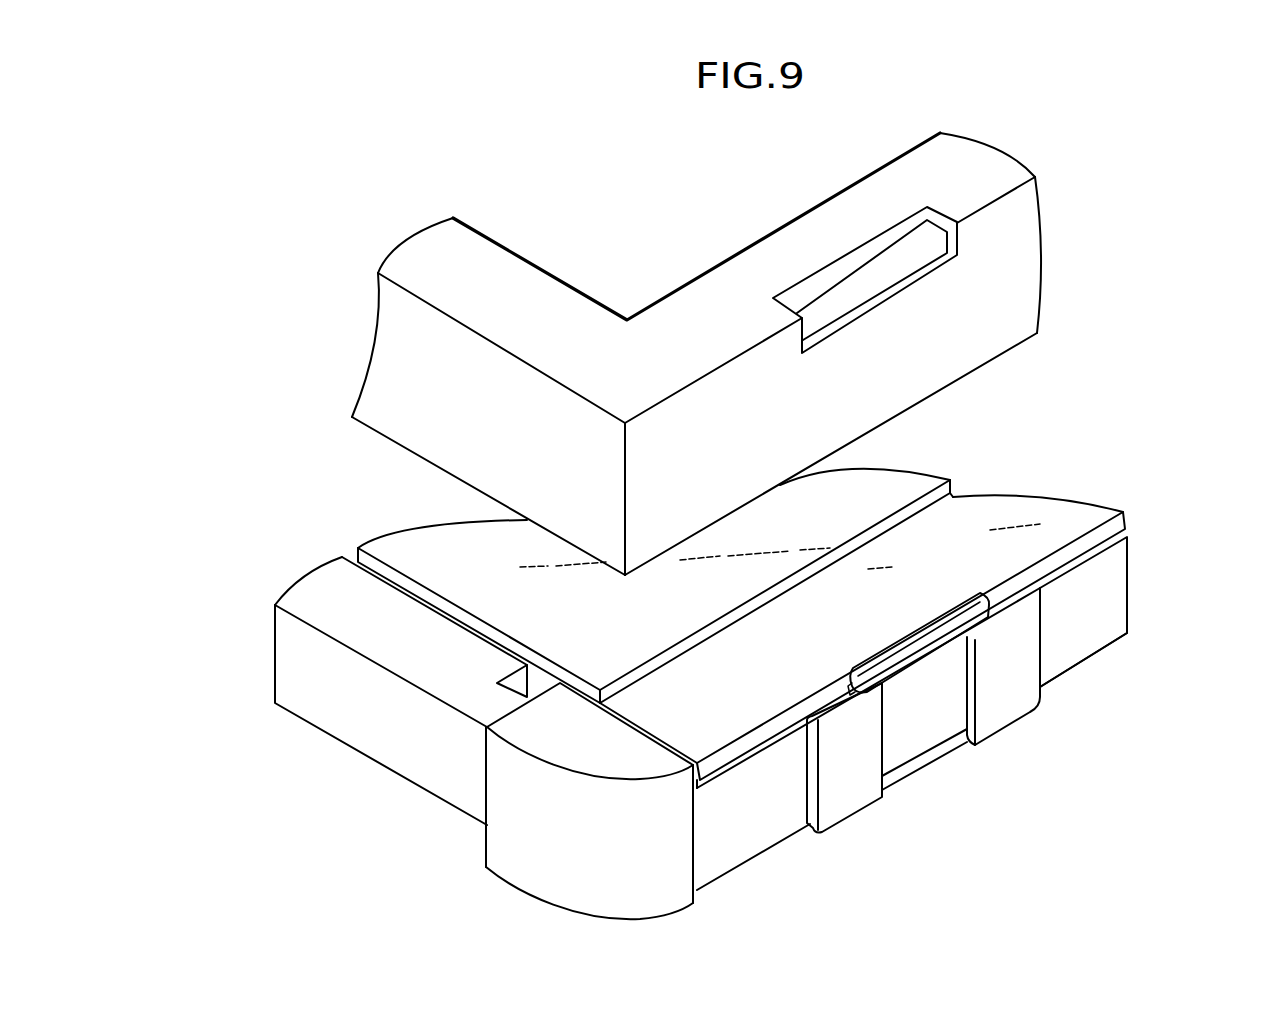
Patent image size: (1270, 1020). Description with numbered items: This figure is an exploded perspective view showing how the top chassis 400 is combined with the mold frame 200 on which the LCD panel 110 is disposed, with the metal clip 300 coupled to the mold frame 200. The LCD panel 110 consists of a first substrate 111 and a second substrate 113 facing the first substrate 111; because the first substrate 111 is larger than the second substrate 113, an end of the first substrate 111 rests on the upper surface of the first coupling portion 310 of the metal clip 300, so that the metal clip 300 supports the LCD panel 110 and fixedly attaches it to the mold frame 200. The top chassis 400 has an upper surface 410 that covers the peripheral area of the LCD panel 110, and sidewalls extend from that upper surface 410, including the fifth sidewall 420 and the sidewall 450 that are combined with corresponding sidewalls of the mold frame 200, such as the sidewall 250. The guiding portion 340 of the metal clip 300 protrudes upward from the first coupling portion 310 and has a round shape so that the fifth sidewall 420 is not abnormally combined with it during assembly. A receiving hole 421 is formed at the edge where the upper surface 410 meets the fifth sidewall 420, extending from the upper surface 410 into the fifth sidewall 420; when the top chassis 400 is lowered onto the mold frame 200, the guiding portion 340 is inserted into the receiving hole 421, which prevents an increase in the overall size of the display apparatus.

The top chassis 400 is at (710, 229).
The upper surface 410 is at (983, 173).
The fifth sidewall 420 is at (993, 297).
The receiving hole 421 is at (922, 238).
The eighth sidewall 450 is at (412, 433).
The LCD panel 110 is at (1040, 372).
The second substrate 113 is at (887, 485).
The first substrate 111 is at (1028, 517).
The fourth sidewall 250 is at (388, 730).
The mold frame 200 is at (1100, 612).
The metal clip 300 is at (996, 693).
The first coupling portion 310 is at (805, 723).
The guiding portion 340 is at (913, 653).